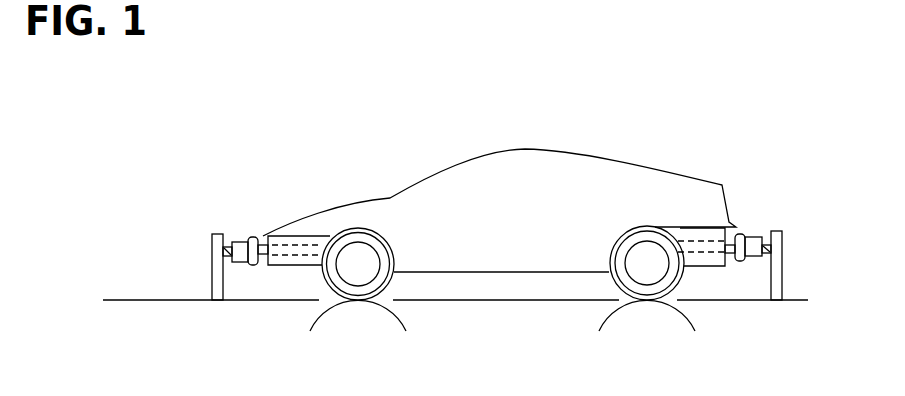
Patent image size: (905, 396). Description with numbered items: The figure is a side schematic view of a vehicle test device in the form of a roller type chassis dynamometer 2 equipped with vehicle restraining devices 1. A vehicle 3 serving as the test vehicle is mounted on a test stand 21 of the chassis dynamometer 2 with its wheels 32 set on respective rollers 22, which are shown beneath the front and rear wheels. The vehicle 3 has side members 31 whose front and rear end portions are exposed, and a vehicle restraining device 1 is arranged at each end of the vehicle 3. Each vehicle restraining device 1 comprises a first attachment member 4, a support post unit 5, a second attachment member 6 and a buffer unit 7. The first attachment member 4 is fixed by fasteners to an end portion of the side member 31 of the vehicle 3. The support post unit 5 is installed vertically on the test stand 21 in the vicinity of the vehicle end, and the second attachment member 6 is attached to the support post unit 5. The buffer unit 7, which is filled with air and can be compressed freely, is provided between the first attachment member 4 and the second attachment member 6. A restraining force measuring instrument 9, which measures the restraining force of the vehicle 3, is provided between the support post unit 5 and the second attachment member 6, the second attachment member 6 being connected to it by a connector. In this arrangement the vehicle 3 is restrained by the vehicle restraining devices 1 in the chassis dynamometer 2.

The vehicle restraining device 1 is at (170, 170).
The chassis dynamometer 2 is at (135, 295).
The test stand 21 is at (170, 299).
The roller 22 is at (313, 319).
The vehicle 3 is at (532, 148).
The side member 31 is at (311, 246).
The wheel 32 is at (399, 262).
The first attachment member 4 is at (262, 245).
The support post unit 5 is at (213, 234).
The second attachment member 6 is at (238, 242).
The buffer unit 7 is at (253, 237).
The restraining force measuring instrument 9 is at (227, 258).